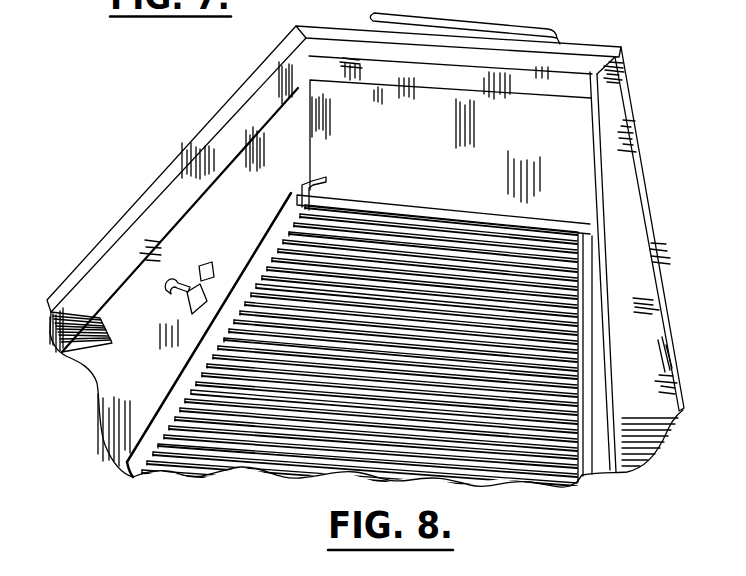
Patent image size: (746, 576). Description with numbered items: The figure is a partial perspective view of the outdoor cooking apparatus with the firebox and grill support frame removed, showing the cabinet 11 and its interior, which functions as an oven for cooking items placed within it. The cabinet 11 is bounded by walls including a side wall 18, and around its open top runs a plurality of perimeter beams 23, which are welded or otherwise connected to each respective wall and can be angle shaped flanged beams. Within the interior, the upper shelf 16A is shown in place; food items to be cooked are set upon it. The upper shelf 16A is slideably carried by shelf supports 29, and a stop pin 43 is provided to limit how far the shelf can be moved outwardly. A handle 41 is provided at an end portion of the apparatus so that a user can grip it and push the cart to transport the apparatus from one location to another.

The cabinet 11 is at (298, 87).
The side wall 18 is at (413, 130).
The upper shelf 16A is at (433, 230).
The perimeter beams 23 is at (140, 262).
The shelf supports 29 is at (553, 219).
The handle 41 is at (570, 40).
The stop pin 43 is at (325, 175).